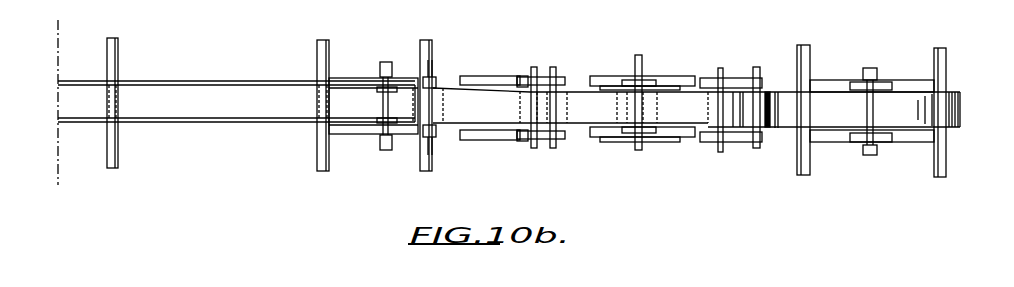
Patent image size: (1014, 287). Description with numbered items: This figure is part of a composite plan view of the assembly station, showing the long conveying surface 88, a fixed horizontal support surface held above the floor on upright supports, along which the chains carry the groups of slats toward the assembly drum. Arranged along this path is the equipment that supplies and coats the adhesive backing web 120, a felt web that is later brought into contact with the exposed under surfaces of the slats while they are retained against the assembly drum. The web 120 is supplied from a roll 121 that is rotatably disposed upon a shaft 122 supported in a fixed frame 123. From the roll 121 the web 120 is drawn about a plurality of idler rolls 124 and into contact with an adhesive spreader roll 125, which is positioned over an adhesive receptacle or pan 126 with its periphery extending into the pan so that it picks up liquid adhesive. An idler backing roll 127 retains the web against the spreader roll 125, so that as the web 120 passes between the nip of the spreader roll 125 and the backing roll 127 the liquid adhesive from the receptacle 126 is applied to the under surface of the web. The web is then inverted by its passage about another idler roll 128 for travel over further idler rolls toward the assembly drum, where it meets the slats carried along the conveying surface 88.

The conveying surface 88 is at (219, 92).
The adhesive backing web 120 is at (585, 118).
The roll 121 is at (837, 120).
The shaft 122 is at (868, 77).
The fixed frame 123 is at (915, 142).
The idler rolls 124 is at (535, 66).
The adhesive spreader roll 125 is at (620, 117).
The adhesive receptacle 126 is at (642, 117).
The idler backing roll 127 is at (658, 133).
The idler roll 128 is at (713, 117).